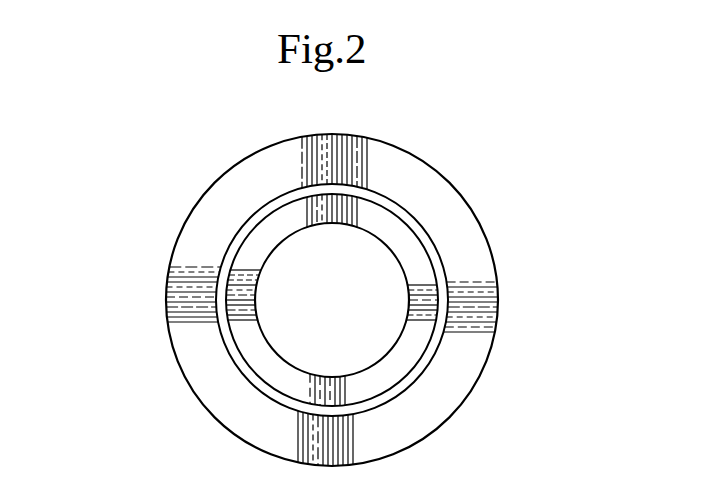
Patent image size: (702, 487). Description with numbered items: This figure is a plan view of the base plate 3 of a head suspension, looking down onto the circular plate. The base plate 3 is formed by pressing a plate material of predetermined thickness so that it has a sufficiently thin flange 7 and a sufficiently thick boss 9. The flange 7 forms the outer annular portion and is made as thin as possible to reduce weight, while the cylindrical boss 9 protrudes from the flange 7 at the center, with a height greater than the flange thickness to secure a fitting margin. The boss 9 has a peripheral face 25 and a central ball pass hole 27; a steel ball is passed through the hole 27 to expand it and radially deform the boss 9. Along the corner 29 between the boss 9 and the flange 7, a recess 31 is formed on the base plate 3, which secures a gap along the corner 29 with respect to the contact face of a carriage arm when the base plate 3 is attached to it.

The base plate 3 is at (373, 286).
The flange 7 is at (434, 168).
The boss 9 is at (373, 215).
The peripheral face 25 is at (447, 281).
The ball pass hole 27 is at (412, 313).
The corner 29 is at (427, 225).
The recess 31 is at (443, 258).